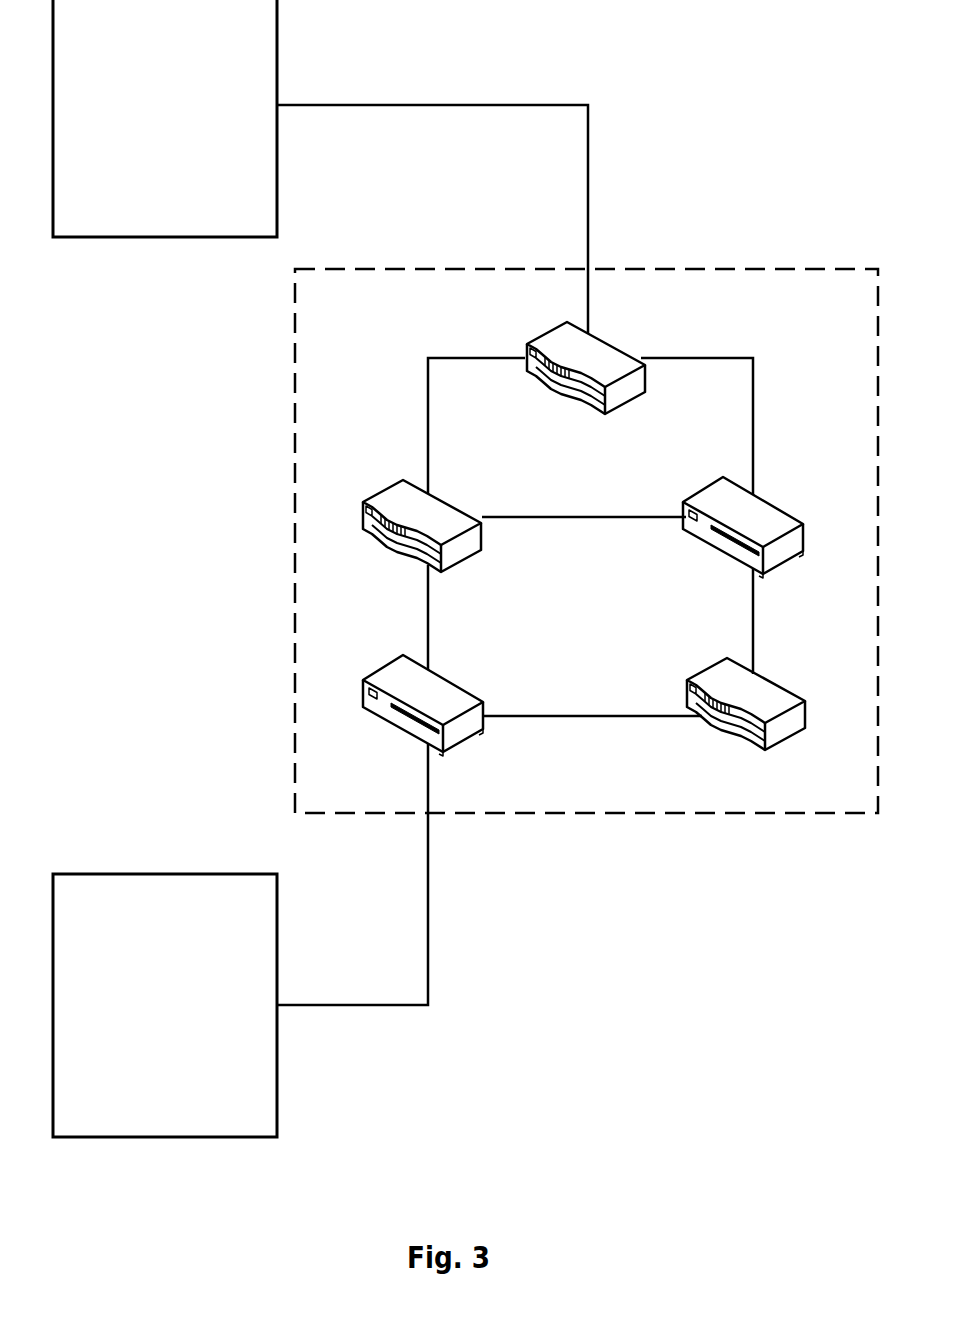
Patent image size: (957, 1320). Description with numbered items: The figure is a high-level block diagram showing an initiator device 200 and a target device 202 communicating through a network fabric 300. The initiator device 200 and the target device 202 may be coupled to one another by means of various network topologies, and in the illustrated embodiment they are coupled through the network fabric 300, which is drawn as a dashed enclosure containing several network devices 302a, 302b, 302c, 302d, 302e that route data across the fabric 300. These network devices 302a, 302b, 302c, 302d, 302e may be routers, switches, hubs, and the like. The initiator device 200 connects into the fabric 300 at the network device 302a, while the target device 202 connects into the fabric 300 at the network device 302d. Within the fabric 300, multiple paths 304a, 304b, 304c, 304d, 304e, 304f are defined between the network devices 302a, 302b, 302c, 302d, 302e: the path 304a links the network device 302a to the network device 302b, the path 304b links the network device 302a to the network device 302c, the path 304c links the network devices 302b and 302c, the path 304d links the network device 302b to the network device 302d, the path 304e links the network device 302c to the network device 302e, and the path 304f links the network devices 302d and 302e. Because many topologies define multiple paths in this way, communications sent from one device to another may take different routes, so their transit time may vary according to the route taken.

The initiator device 200 is at (144, 147).
The target device 202 is at (144, 1047).
The network fabric 300 is at (295, 524).
The network device 302a is at (590, 358).
The network device 302b is at (432, 520).
The network device 302c is at (756, 517).
The network device 302d is at (435, 693).
The network device 302e is at (760, 695).
The path 304a is at (428, 405).
The path 304b is at (755, 407).
The path 304c is at (582, 516).
The path 304d is at (428, 597).
The path 304e is at (755, 597).
The path 304f is at (592, 715).